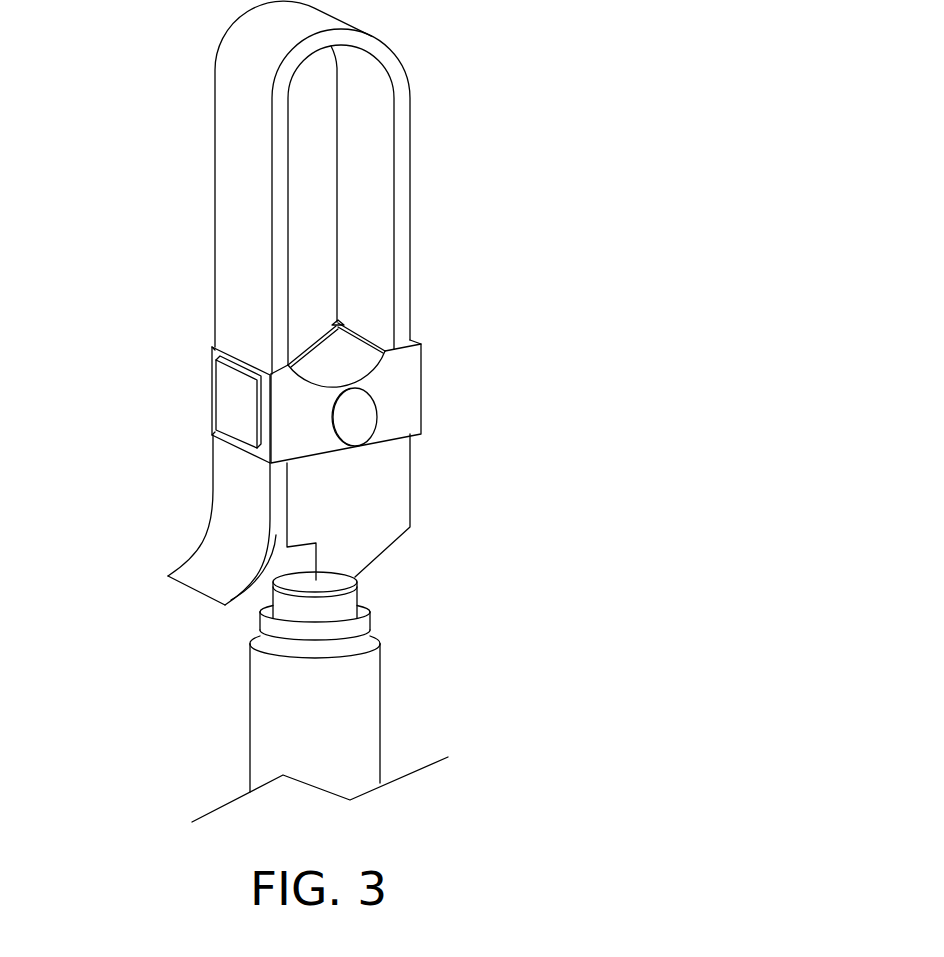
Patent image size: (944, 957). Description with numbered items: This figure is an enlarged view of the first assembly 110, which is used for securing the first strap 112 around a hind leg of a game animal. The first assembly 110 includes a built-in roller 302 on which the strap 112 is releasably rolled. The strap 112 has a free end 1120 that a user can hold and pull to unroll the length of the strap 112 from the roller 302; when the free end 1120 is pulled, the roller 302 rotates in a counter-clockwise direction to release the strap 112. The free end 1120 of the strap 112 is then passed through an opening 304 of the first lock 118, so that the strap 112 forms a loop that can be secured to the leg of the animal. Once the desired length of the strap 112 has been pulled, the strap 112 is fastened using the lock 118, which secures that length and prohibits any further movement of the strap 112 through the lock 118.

The first strap 112 is at (396, 92).
The opening 304 is at (338, 325).
The first lock 118 is at (234, 396).
The roller 302 is at (354, 417).
The first assembly 110 is at (356, 510).
The free end 1120 is at (203, 588).